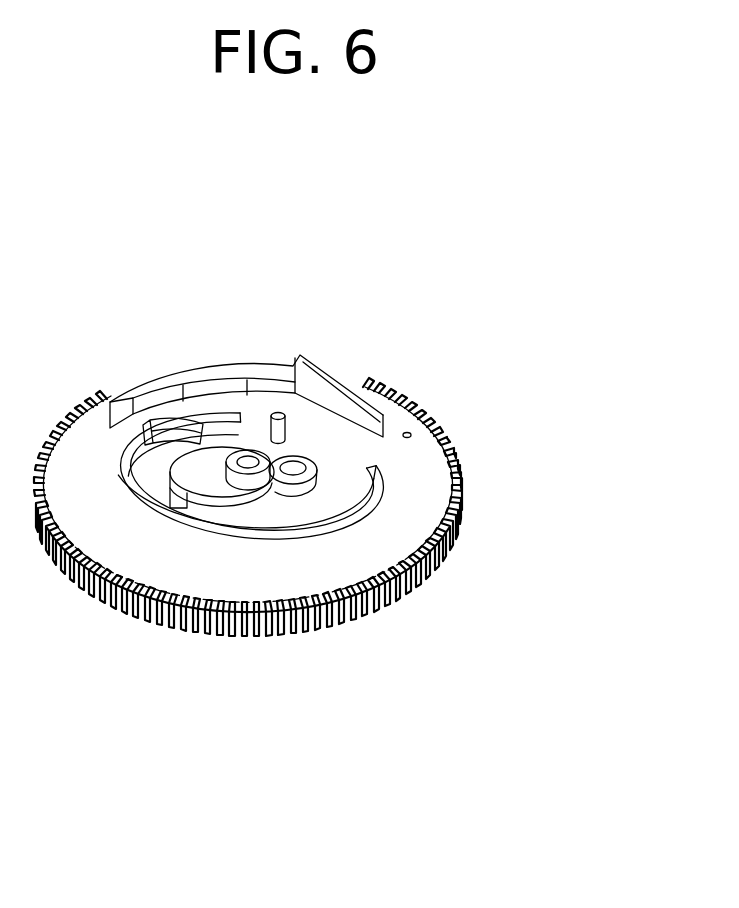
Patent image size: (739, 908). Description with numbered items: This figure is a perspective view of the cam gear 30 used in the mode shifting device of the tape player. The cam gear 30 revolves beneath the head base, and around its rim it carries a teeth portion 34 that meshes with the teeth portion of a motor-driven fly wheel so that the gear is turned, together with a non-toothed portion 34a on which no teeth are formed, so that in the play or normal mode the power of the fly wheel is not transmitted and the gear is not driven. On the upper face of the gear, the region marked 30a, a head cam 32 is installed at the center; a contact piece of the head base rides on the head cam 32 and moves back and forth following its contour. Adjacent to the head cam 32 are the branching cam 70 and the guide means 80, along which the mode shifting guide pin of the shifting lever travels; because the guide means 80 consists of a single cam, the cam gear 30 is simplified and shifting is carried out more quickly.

The cam gear 30 is at (344, 499).
The upper surface of gear wheel 30a is at (433, 483).
The head cam 32 is at (300, 455).
The teeth portion 34 is at (321, 571).
The non-toothed portion 34a is at (398, 588).
The branching cam 70 is at (221, 367).
The guide means 80 is at (245, 547).